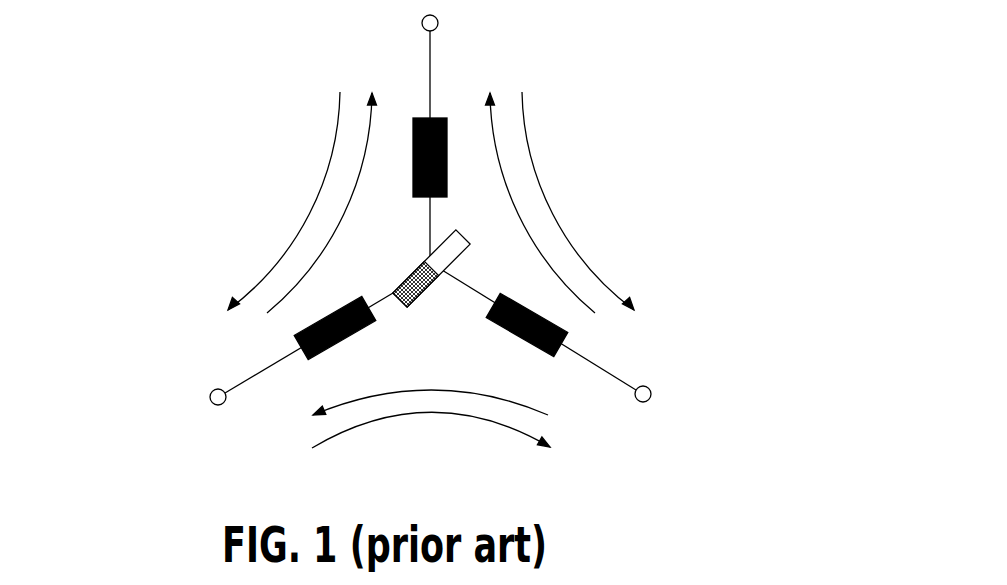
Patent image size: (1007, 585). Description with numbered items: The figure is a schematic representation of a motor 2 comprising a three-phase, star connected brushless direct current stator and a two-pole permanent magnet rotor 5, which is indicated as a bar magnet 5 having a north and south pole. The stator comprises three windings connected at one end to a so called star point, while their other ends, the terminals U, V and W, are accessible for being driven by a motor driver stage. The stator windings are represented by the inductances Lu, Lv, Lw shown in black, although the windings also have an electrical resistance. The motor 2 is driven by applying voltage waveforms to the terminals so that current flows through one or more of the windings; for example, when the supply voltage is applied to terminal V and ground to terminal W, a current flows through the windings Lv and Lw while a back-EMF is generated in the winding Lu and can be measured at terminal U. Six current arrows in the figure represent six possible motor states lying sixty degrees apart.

The motor 2 is at (420, 231).
The two-pole permanent magnet rotor 5 is at (467, 247).
The inductance Lu is at (410, 157).
The inductance Lv is at (527, 318).
The inductance Lw is at (335, 319).